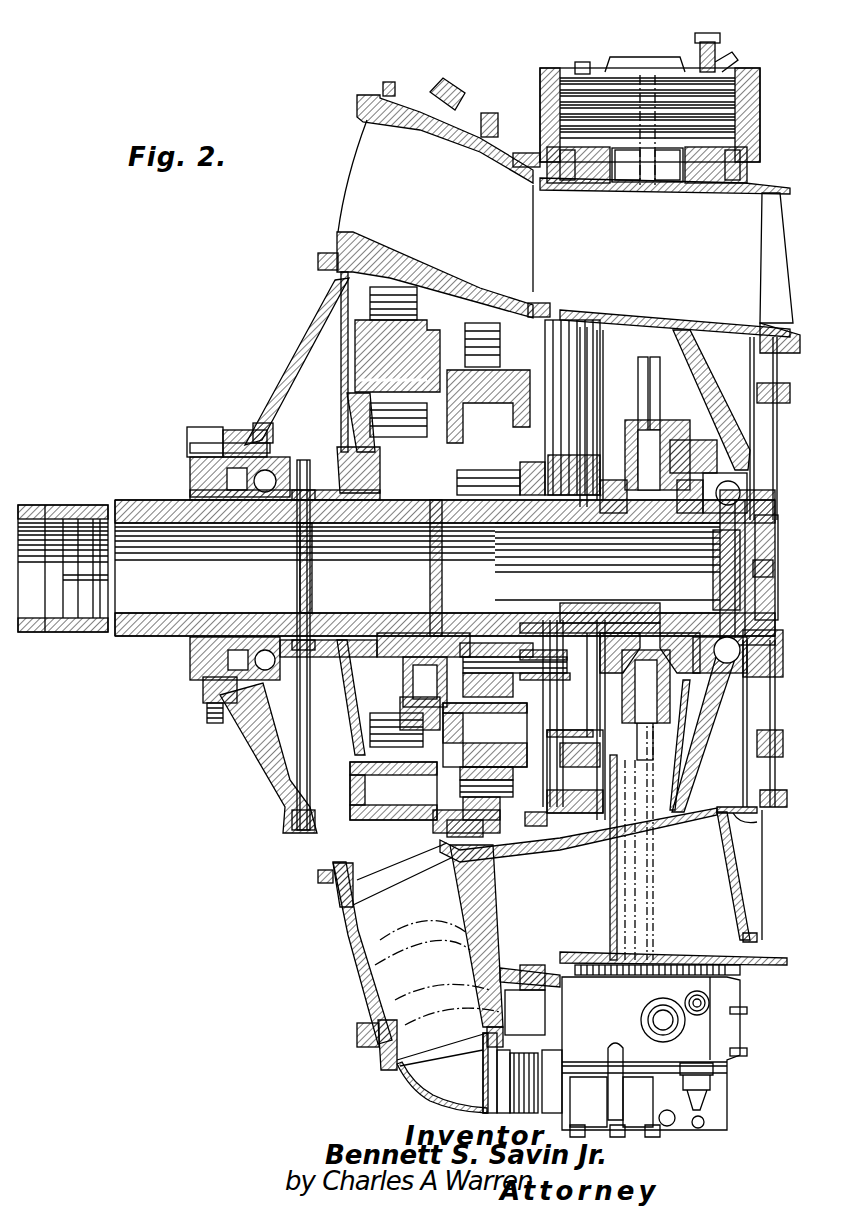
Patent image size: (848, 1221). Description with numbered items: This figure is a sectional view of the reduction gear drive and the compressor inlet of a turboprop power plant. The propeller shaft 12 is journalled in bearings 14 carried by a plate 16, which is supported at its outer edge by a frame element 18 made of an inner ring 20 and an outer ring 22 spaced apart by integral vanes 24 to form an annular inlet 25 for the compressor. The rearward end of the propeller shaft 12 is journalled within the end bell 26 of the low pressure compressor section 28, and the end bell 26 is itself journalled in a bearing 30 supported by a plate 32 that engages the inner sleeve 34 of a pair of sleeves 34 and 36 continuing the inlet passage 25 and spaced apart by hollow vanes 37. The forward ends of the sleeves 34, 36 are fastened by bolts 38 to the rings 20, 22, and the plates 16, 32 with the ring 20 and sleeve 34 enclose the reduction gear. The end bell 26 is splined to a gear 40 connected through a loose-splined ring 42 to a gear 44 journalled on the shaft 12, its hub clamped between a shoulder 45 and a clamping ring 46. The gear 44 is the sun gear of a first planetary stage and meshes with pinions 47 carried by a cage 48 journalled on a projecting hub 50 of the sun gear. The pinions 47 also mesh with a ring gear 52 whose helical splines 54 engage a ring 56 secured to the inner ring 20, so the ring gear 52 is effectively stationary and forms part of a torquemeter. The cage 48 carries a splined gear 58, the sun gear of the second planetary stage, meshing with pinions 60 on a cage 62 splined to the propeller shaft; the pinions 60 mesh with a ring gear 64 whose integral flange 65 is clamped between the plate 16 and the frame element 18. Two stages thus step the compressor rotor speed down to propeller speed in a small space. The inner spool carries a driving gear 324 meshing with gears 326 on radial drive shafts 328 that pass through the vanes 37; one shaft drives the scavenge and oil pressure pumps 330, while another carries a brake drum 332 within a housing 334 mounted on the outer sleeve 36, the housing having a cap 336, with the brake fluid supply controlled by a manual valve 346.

The propeller shaft 12 is at (158, 635).
The bearings 14 is at (240, 668).
The plate 16 is at (258, 730).
The frame element 18 is at (365, 1046).
The inner ring 20 is at (352, 233).
The outer ring 22 is at (403, 122).
The vanes 24 is at (510, 896).
The annular inlet 25 is at (448, 200).
The end bell 26 is at (777, 512).
The low pressure compressor section 28 is at (778, 432).
The bearing 30 is at (740, 655).
The plate 32 is at (708, 725).
The inner sleeve 34 is at (770, 815).
The outer sleeve 36 is at (775, 192).
The vanes 37 is at (742, 878).
The bolts 38 is at (524, 153).
The gear 40 is at (568, 465).
The loose-splined ring 42 is at (533, 465).
The gear 44 is at (482, 470).
The shoulder 45 is at (482, 530).
The clamping ring 46 is at (560, 545).
The pinions 47 is at (497, 640).
The cage 48 is at (470, 642).
The projecting hub 50 is at (392, 545).
The ring gear 52 is at (455, 800).
The helical splines 54 is at (462, 870).
The ring 56 is at (432, 852).
The gear 58 is at (372, 408).
The pinions 60 is at (398, 820).
The cage 62 is at (333, 660).
The ring gear 64 is at (388, 880).
The flange 65 is at (333, 256).
The driving gear 324 is at (690, 632).
The gears 326 is at (625, 640).
The drive shafts 328 is at (648, 365).
The scavenge and oil pressure pumps 330 is at (725, 1000).
The brake drum 332 is at (745, 125).
The housing 334 is at (758, 100).
The cap 336 is at (582, 70).
The manual valve 346 is at (720, 45).